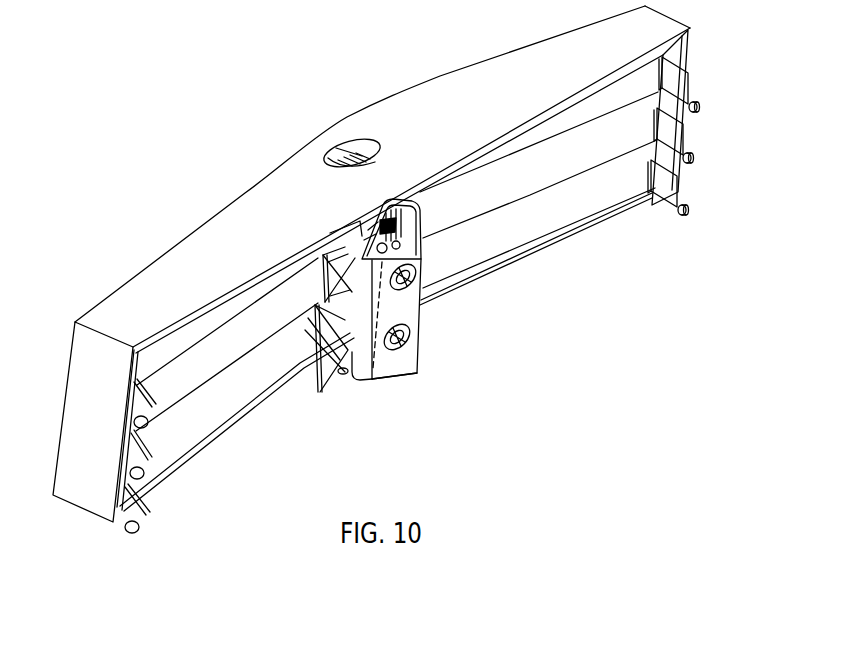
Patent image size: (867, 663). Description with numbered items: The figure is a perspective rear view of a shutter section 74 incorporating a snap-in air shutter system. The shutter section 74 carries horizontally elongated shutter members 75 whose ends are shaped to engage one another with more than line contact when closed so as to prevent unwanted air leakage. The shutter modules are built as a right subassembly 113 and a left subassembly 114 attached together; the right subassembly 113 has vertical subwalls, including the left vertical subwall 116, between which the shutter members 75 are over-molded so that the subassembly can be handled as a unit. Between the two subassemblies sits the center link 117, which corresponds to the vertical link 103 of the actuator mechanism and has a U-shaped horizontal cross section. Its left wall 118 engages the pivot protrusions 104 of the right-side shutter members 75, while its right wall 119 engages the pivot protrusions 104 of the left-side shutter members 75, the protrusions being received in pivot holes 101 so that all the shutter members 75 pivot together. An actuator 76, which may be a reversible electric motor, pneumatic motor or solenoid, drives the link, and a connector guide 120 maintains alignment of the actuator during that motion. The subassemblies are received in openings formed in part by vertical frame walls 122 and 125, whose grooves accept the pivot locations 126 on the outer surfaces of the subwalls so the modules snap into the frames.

The shutter section 74 is at (150, 238).
The shutter members 75 is at (203, 413).
The actuator 76 is at (344, 162).
The pivot holes 101 is at (397, 254).
The vertical link 103 is at (395, 380).
The pivot protrusions 104 is at (346, 360).
The right subassembly 113 is at (157, 522).
The left subassembly 114 is at (652, 216).
The left vertical subwall 116 is at (333, 258).
The center link 117 is at (405, 312).
The left wall 118 is at (377, 375).
The right wall 119 is at (405, 220).
The connector guide 120 is at (357, 160).
The vertical frame wall 122 is at (83, 493).
The vertical frame wall 125 is at (692, 50).
The pivot locations 126 is at (688, 64).